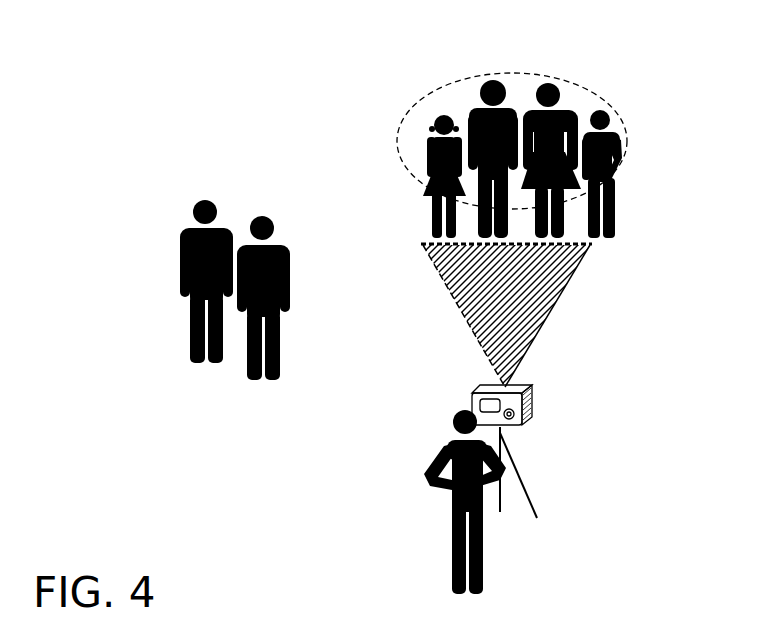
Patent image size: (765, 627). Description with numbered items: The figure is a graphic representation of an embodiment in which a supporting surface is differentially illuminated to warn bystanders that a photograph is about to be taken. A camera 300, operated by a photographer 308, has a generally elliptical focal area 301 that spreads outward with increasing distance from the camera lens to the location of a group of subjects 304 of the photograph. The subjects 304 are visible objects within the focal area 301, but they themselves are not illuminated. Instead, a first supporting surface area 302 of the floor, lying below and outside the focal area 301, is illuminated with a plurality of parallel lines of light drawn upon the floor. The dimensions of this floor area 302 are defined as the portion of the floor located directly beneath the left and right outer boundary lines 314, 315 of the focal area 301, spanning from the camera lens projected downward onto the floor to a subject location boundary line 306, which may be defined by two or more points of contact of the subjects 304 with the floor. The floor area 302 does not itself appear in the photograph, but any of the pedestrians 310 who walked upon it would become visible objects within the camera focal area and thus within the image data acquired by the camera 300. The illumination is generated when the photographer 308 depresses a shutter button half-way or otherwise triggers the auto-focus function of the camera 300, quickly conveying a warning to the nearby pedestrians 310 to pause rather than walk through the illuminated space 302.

The camera 300 is at (533, 403).
The focal area 301 is at (430, 95).
The first supporting surface area 302 is at (485, 308).
The group of subjects 304 is at (450, 70).
The subject location boundary line 306 is at (432, 243).
The photographer 308 is at (436, 455).
The pedestrians 310 is at (170, 207).
The left outer boundary line 314 is at (453, 310).
The right outer boundary line 315 is at (562, 298).